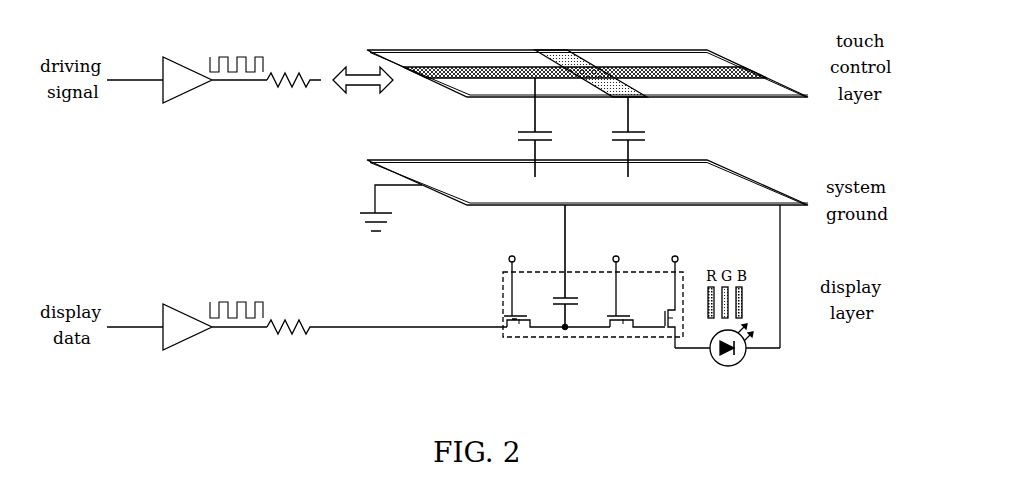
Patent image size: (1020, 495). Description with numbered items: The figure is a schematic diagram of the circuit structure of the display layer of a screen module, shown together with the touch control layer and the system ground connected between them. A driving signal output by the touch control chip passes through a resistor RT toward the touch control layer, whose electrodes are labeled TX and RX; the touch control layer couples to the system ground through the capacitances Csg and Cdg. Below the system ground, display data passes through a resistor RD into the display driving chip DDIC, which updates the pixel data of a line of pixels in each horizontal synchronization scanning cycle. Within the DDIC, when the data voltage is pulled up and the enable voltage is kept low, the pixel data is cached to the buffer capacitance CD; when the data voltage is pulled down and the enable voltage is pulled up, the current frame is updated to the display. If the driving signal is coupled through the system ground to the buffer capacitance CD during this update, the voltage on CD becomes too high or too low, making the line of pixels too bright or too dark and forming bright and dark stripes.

The driving signal series resistor RT is at (294, 70).
The display data series resistor RD is at (387, 317).
The touch transmit electrode TX is at (587, 65).
The touch receive electrode RX is at (583, 65).
The sensor-to-ground capacitance Csg is at (544, 127).
The drive-to-ground capacitance Cdg is at (638, 137).
The buffer capacitance CD is at (574, 267).
The display driver integrated circuit DDIC is at (586, 299).